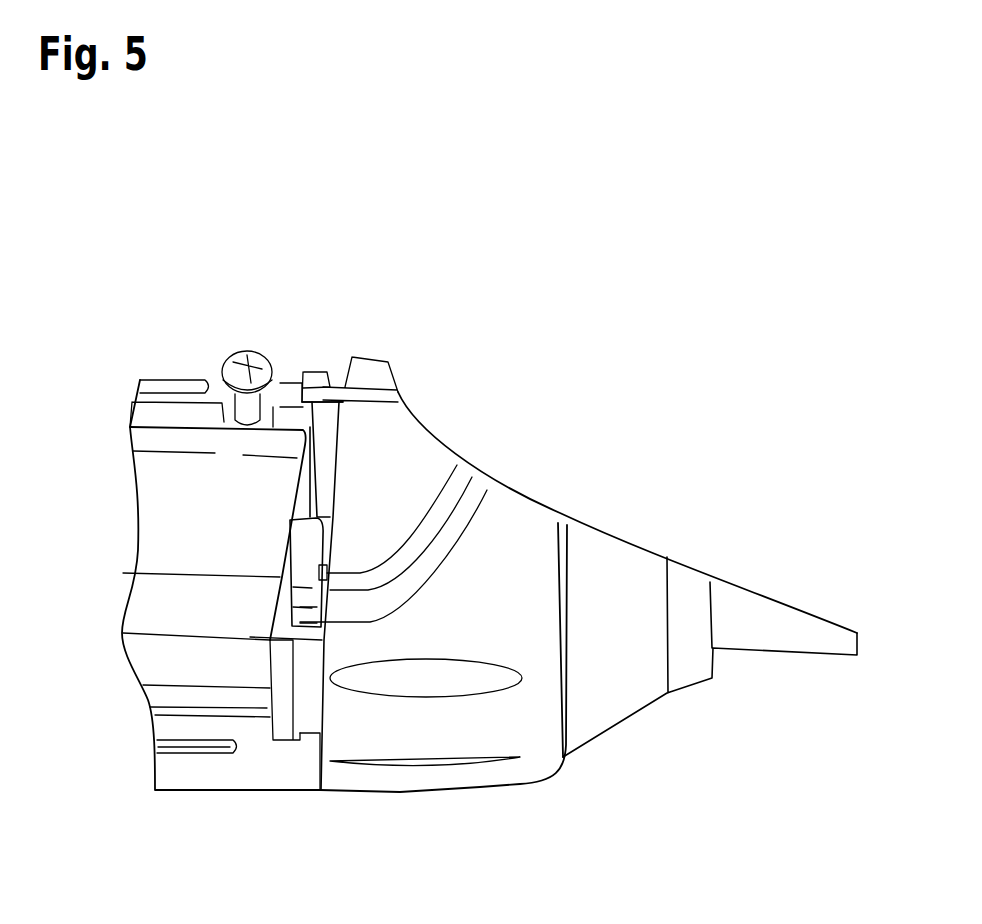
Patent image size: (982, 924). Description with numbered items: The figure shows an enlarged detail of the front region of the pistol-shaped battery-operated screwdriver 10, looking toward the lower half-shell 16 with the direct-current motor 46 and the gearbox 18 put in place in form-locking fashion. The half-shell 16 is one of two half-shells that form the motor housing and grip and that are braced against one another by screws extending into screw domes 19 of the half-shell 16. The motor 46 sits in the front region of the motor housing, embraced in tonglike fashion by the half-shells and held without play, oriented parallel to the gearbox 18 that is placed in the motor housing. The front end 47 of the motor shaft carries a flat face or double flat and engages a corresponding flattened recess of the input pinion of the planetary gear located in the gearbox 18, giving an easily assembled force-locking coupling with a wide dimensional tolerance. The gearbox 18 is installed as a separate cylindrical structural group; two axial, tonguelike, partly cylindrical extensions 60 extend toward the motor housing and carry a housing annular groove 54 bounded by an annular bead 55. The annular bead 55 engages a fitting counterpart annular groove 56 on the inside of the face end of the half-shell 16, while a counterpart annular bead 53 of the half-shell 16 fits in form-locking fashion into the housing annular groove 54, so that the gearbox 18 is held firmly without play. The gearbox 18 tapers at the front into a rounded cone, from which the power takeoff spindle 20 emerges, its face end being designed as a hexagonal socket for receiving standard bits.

The battery-operated screwdriver 10 is at (590, 378).
The half-shell 16 is at (155, 413).
The gearbox 18 is at (510, 537).
The screw dome 19 is at (218, 366).
The power takeoff spindle 20 is at (785, 623).
The direct-current motor 46 is at (150, 507).
The front end of the motor shaft 47 is at (330, 572).
The counterpart annular bead 53 is at (330, 702).
The housing annular groove 54 is at (250, 718).
The annular bead 55 is at (324, 352).
The counterpart annular groove 56 is at (344, 360).
The extension 60 is at (288, 382).